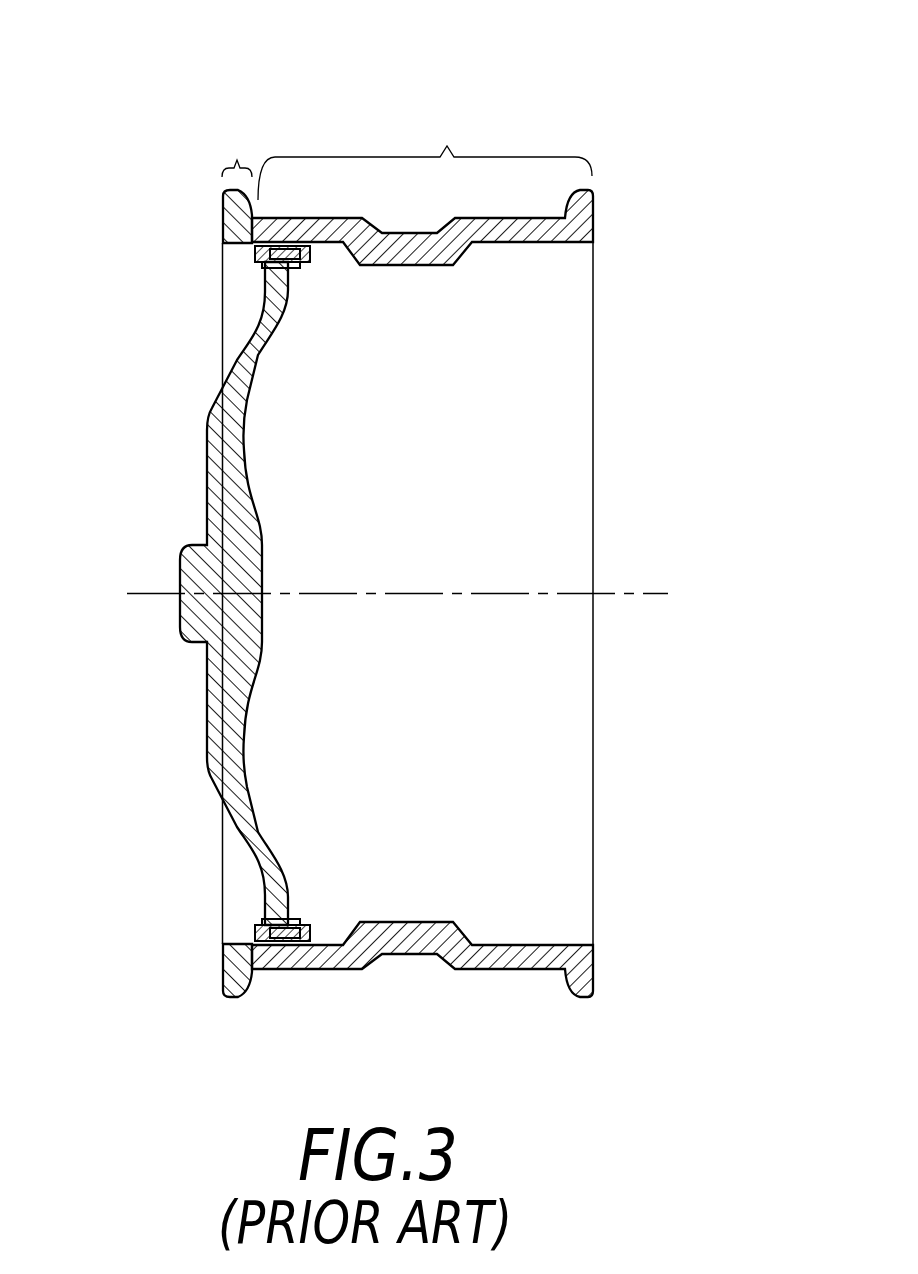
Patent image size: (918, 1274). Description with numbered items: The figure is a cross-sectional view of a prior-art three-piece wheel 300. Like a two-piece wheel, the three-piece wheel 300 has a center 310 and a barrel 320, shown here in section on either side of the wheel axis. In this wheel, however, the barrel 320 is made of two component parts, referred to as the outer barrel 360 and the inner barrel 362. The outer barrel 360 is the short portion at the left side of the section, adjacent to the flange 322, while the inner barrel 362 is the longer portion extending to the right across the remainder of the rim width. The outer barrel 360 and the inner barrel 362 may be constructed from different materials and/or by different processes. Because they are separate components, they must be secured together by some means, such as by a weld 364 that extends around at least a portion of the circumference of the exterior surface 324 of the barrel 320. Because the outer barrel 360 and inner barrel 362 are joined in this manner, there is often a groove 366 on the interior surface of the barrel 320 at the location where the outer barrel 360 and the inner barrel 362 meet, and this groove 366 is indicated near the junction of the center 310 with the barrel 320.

The three-piece wheel 300 is at (204, 106).
The center 310 is at (173, 624).
The barrel 320 is at (534, 146).
The rim flange 322 is at (228, 262).
The exterior surface 324 is at (340, 210).
The outer barrel 360 is at (246, 149).
The inner barrel 362 is at (425, 156).
The weld 364 is at (261, 208).
The groove 366 is at (257, 256).